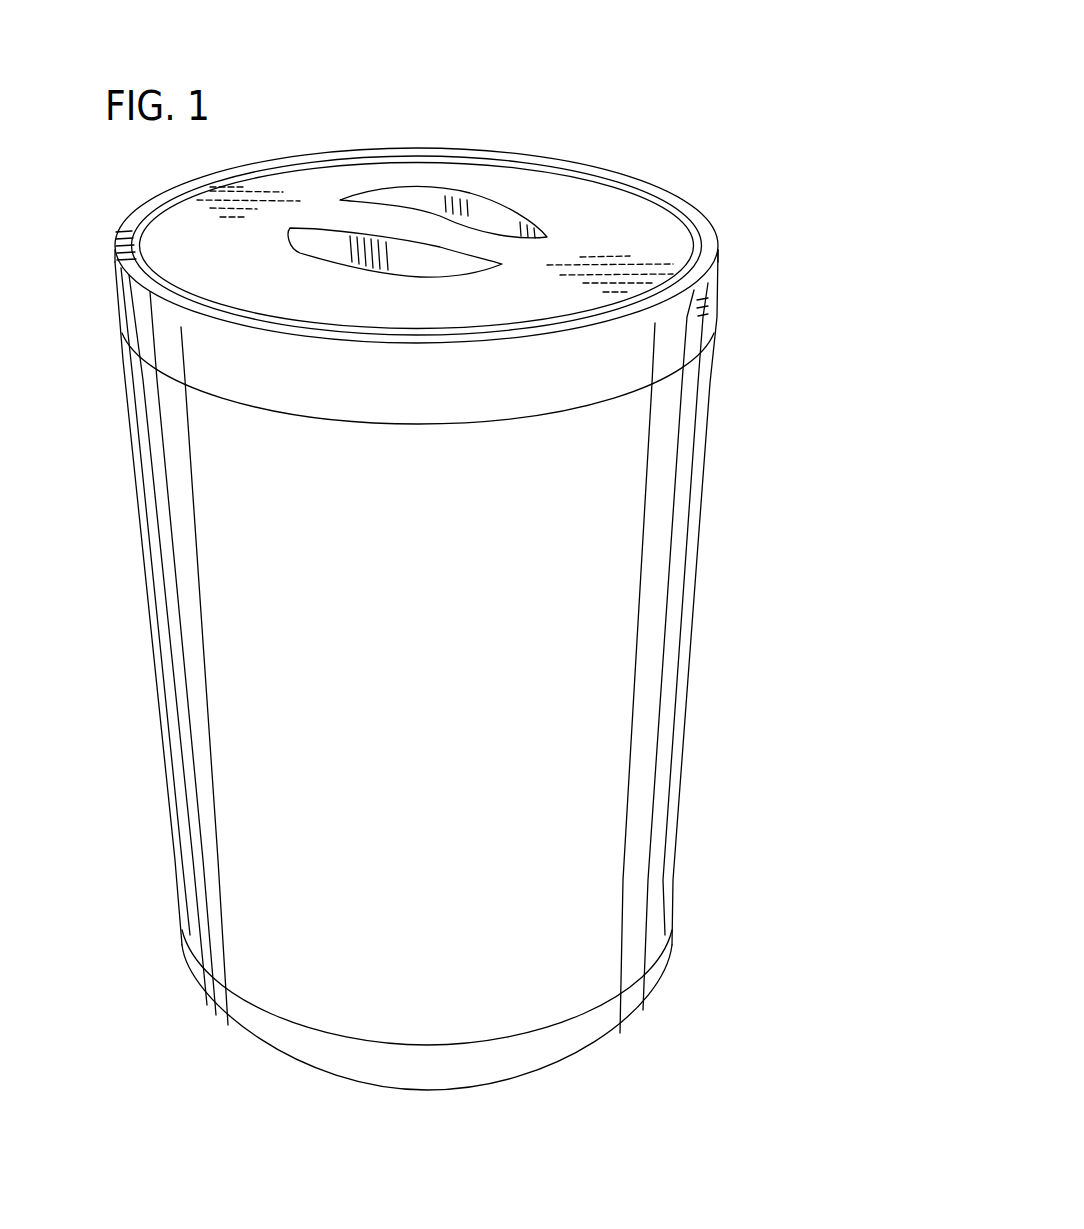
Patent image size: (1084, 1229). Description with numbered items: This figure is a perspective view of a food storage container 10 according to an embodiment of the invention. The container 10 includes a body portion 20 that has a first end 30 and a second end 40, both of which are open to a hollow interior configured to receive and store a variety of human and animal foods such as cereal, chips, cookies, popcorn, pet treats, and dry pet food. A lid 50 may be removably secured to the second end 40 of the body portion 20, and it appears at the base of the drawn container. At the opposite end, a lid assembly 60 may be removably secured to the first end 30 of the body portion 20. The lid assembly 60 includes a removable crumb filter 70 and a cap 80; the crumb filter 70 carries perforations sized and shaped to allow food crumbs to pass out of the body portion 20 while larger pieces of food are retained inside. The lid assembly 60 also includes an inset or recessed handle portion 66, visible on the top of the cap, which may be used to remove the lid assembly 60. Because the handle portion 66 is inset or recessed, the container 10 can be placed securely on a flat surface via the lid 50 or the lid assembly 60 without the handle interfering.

The food storage container 10 is at (683, 108).
The body portion 20 is at (598, 682).
The first end 30 is at (738, 347).
The second end 40 is at (708, 917).
The lid 50 is at (520, 1060).
The lid assembly 60 is at (98, 327).
The handle portion 66 is at (395, 220).
The crumb filter 70 is at (692, 313).
The cap 80 is at (645, 230).